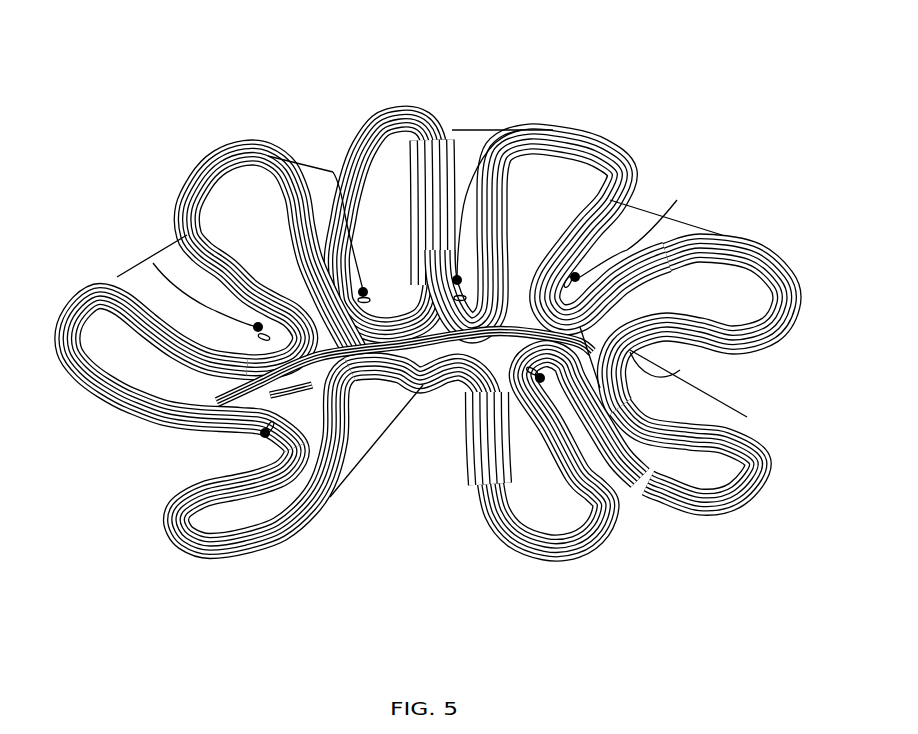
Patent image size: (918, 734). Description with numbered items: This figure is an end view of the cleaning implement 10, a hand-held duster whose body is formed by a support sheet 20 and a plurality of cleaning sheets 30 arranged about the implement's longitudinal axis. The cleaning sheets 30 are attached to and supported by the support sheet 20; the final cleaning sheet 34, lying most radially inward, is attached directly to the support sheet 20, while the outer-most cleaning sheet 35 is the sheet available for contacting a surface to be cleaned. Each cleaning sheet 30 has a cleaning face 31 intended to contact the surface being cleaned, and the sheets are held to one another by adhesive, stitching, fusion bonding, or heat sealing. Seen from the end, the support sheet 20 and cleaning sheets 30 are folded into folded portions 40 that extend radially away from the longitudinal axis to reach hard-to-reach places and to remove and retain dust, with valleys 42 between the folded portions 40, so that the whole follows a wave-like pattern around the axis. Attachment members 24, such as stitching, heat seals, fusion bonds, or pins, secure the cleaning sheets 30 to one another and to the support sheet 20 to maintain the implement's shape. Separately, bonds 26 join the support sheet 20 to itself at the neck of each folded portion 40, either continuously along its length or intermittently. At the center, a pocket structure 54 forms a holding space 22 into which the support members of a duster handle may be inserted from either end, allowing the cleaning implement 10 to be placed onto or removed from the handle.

The cleaning implement 10 is at (405, 351).
The support sheet 20 is at (240, 197).
The holding space 22 is at (463, 340).
The attachment members 24 is at (360, 340).
The bonds 26 is at (709, 349).
The cleaning sheets 30 is at (303, 535).
The cleaning face 31 is at (117, 266).
The final cleaning sheet 34 is at (112, 370).
The outer-most cleaning sheet 35 is at (710, 507).
The folded portions 40 is at (423, 110).
The valleys 42 is at (650, 207).
The pocket structure 54 is at (426, 340).